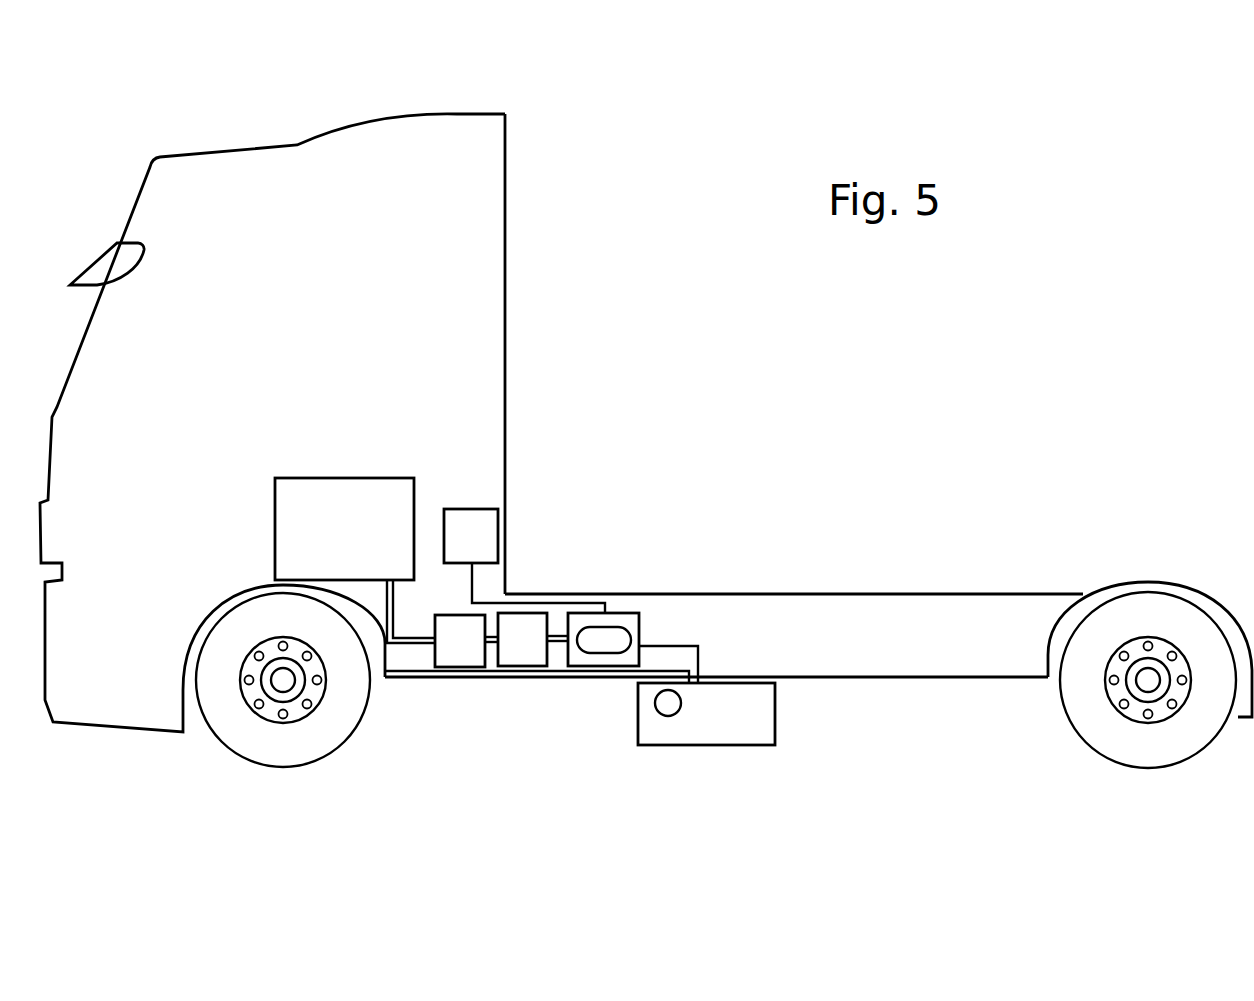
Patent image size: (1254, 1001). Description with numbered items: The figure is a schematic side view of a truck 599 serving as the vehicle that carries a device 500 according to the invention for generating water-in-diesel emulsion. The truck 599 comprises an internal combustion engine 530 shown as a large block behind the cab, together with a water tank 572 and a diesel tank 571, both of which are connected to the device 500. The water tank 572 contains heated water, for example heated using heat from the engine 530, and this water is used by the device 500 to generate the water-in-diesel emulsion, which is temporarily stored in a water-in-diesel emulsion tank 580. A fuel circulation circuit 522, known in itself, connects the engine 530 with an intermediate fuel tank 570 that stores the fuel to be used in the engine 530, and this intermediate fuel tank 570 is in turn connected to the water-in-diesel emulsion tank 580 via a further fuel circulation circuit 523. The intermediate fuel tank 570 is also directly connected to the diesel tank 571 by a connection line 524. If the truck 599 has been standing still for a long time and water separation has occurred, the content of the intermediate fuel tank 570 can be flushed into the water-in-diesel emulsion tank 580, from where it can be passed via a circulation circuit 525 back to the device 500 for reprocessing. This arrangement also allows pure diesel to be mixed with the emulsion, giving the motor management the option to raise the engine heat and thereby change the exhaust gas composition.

The truck 599 is at (213, 78).
The internal combustion engine 530 is at (361, 517).
The water tank 572 is at (483, 538).
The intermediate fuel tank 570 is at (475, 618).
The fuel circulation circuit 522 is at (412, 642).
The fuel circulation circuit 523 is at (490, 642).
The water-in-diesel emulsion tank 580 is at (522, 652).
The device 500 is at (565, 664).
The circulation circuit 525 is at (568, 666).
The connection line 524 is at (670, 672).
The diesel tank 571 is at (707, 730).